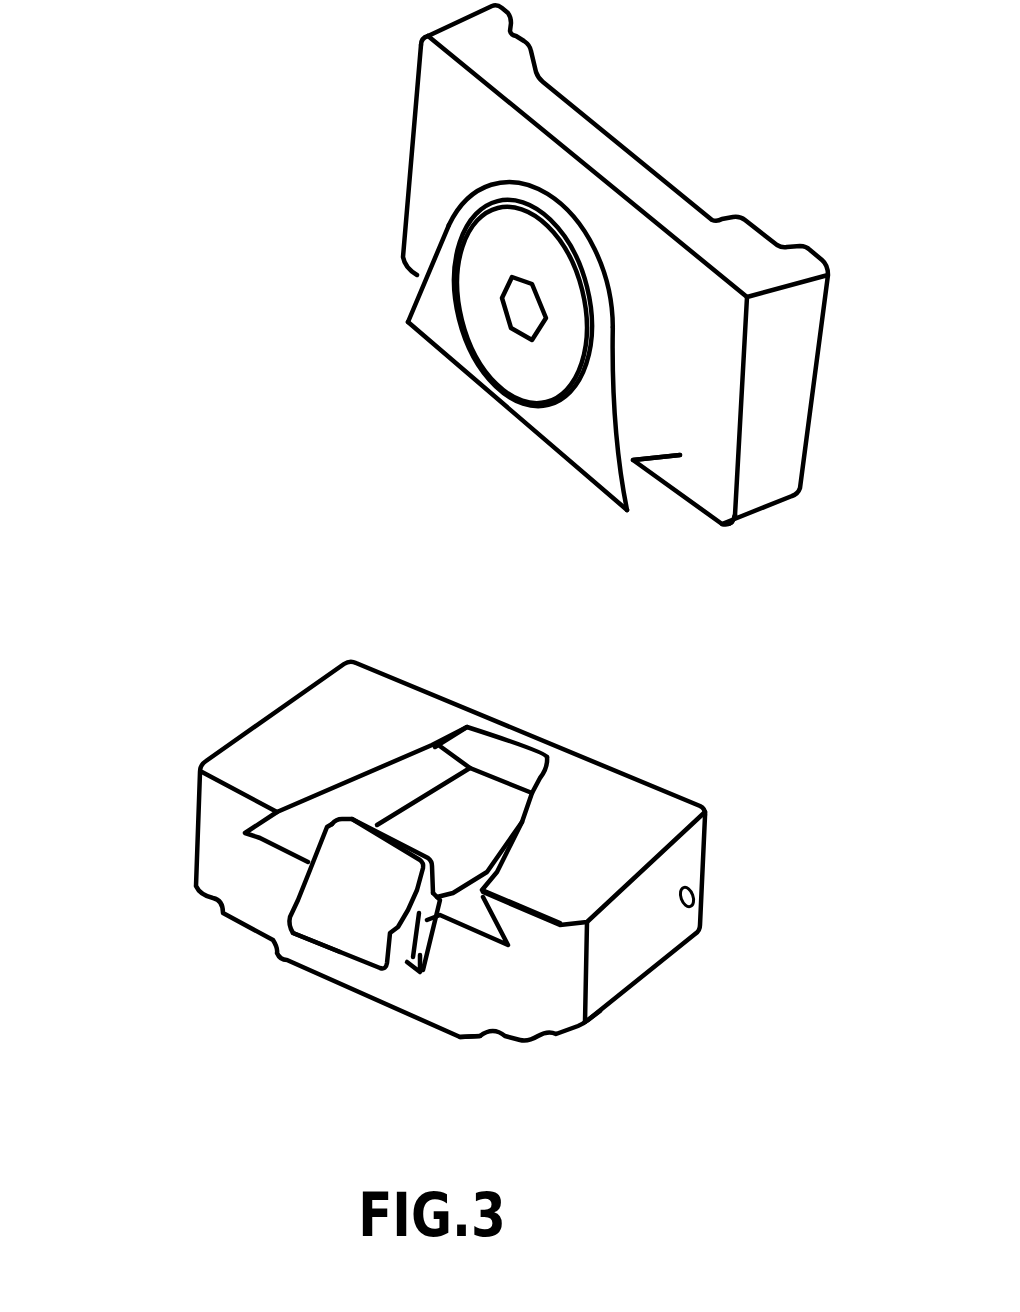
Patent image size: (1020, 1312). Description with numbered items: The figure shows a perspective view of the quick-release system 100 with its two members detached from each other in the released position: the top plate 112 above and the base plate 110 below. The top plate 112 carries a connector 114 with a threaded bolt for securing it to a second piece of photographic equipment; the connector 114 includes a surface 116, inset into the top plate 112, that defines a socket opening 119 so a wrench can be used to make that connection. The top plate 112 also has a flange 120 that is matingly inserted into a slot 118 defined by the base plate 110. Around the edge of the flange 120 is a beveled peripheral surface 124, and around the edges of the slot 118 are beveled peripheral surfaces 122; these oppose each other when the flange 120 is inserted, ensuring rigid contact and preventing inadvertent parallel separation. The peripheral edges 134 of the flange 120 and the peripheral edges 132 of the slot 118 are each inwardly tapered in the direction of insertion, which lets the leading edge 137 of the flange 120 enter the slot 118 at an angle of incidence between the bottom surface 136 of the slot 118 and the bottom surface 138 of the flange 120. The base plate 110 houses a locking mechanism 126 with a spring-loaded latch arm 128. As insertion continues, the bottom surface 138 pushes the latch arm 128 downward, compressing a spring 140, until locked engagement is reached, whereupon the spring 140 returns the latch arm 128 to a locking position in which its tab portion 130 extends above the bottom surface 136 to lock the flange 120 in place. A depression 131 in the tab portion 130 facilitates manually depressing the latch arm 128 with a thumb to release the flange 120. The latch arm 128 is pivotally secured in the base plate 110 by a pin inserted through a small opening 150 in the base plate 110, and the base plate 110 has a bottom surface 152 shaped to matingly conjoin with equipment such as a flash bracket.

The quick-release system 100 is at (237, 490).
The base plate 110 is at (196, 885).
The top plate 112 is at (551, 264).
The connector 114 is at (490, 320).
The surface 116 is at (522, 305).
The slot 118 is at (288, 827).
The socket opening 119 is at (527, 304).
The flange 120 is at (465, 378).
The beveled peripheral surfaces 122 is at (367, 775).
The beveled peripheral surface 124 is at (636, 470).
The locking mechanism 126 is at (298, 940).
The spring-loaded latch arm 128 is at (563, 727).
The tab portion 130 is at (393, 930).
The depression 131 is at (413, 960).
The peripheral edges 132 is at (437, 737).
The peripheral edges 134 is at (443, 214).
The bottom surface 136 is at (463, 907).
The leading edge 137 is at (540, 195).
The bottom surface 138 is at (597, 440).
The spring 140 is at (415, 980).
The opening 150 is at (699, 903).
The bottom surface 152 is at (588, 1028).